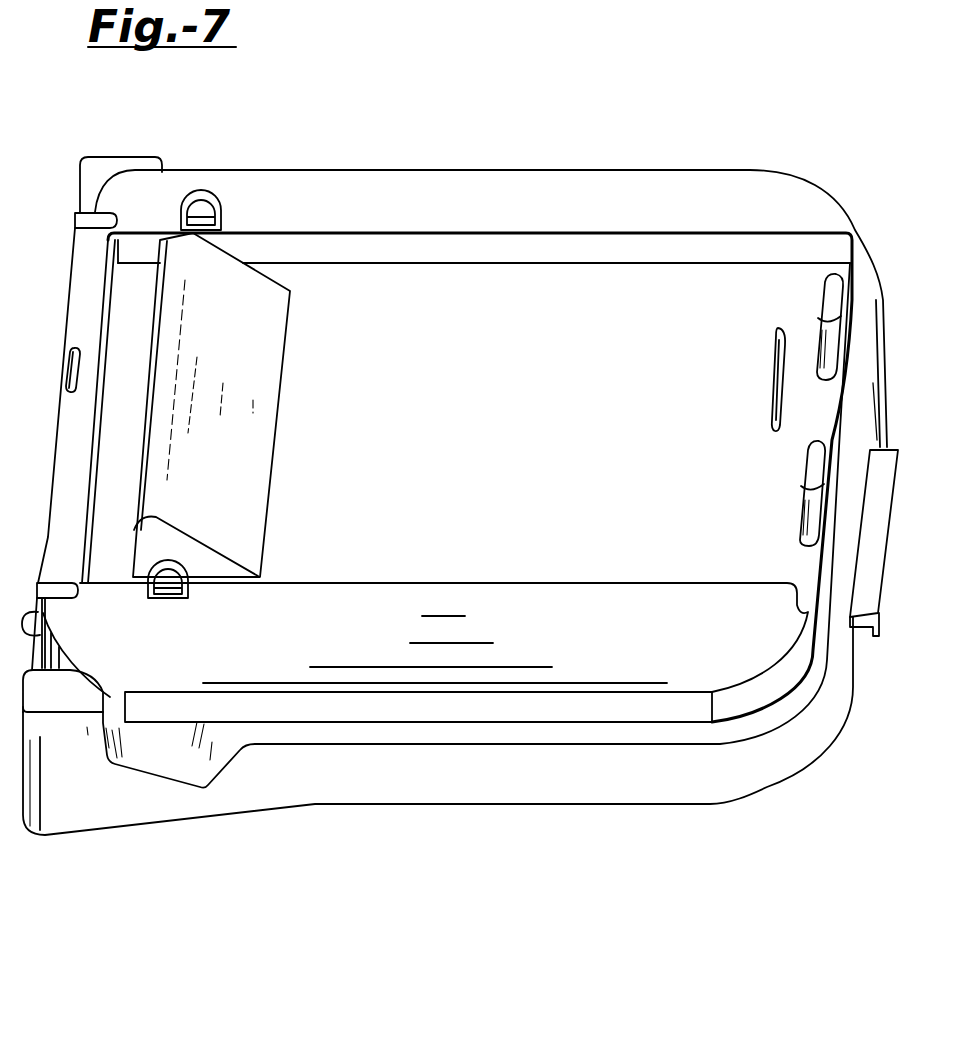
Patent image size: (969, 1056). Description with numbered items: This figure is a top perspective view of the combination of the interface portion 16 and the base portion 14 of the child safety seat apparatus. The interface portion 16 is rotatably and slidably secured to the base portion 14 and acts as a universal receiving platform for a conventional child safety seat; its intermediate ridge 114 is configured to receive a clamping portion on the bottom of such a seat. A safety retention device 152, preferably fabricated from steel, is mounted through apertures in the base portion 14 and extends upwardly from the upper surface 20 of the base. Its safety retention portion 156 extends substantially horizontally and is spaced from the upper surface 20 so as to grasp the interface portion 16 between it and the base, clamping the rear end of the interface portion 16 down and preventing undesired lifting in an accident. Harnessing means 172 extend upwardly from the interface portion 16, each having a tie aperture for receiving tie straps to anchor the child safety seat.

The base portion 14 is at (474, 821).
The interface portion 16 is at (494, 156).
The upper surface 20 is at (45, 660).
The intermediate ridge 114 is at (277, 370).
The safety retention device 152 is at (41, 636).
The safety retention portion 156 is at (97, 213).
The harnessing means 172 is at (203, 192).